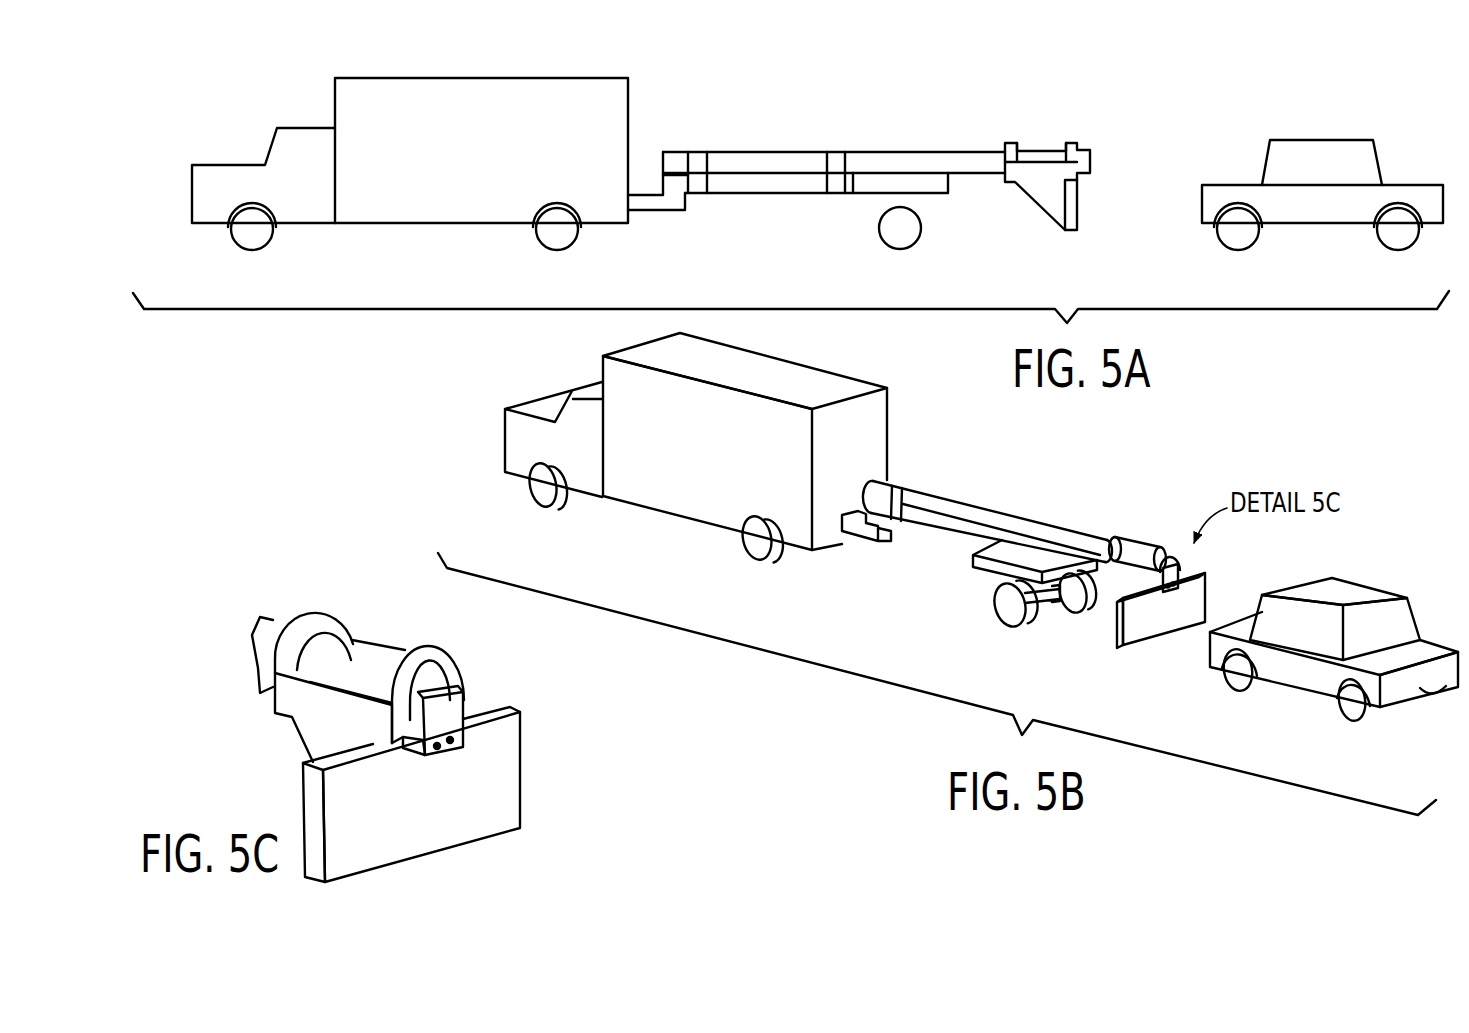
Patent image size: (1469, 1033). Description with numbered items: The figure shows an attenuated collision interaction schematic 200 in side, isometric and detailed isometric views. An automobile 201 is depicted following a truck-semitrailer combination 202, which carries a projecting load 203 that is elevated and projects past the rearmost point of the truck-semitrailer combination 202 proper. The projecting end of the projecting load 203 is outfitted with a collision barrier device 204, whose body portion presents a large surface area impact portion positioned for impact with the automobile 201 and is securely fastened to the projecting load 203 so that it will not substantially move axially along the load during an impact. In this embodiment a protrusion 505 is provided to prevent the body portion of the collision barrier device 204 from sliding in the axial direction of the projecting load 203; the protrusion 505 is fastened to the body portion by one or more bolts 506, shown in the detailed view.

In FIG. 5A, the attenuated collision interaction schematic 200 is at (477, 59).
In FIG. 5B, the attenuated collision interaction schematic 200 is at (1327, 451).
In FIG. 5A, the automobile 201 is at (1325, 136).
In FIG. 5B, the automobile 201 is at (1369, 578).
In FIG. 5A, the truck-semitrailer combination 202 is at (667, 110).
In FIG. 5A, the projecting load 203 is at (912, 145).
In FIG. 5B, the projecting load 203 is at (1060, 518).
In FIG. 5C, the projecting load 203 is at (466, 670).
In FIG. 5A, the collision barrier device 204 is at (1031, 210).
In FIG. 5B, the collision barrier device 204 is at (1111, 656).
In FIG. 5C, the collision barrier device 204 is at (530, 795).
In FIG. 5C, the protrusion 505 is at (451, 727).
In FIG. 5C, the bolts 506 is at (450, 744).